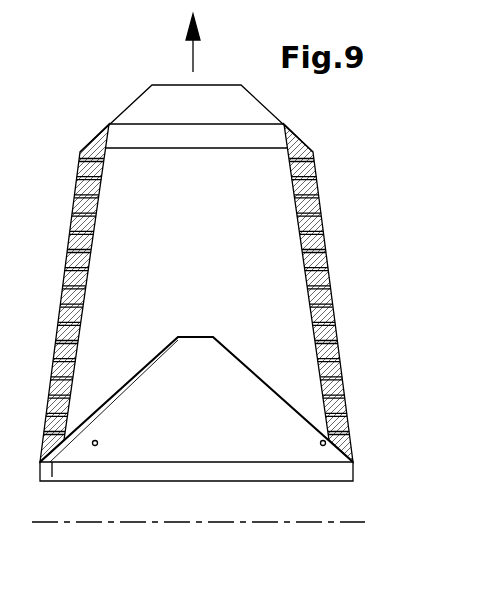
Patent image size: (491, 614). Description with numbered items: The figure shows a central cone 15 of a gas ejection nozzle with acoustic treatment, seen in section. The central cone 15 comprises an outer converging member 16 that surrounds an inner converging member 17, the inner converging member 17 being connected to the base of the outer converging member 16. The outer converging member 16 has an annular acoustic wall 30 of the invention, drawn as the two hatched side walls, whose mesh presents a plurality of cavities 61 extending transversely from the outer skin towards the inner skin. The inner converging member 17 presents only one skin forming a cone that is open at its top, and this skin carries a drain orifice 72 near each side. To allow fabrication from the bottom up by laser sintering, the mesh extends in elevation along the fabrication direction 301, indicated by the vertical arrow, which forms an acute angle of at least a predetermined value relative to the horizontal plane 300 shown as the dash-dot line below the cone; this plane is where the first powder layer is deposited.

The central cone 15 is at (364, 232).
The outer converging member 16 is at (327, 202).
The inner converging member 17 is at (298, 403).
The annular acoustic wall 30 is at (60, 281).
The cavities 61 is at (75, 190).
The drain orifice 72 is at (94, 440).
The horizontal plane 300 is at (317, 524).
The fabrication direction 301 is at (192, 54).